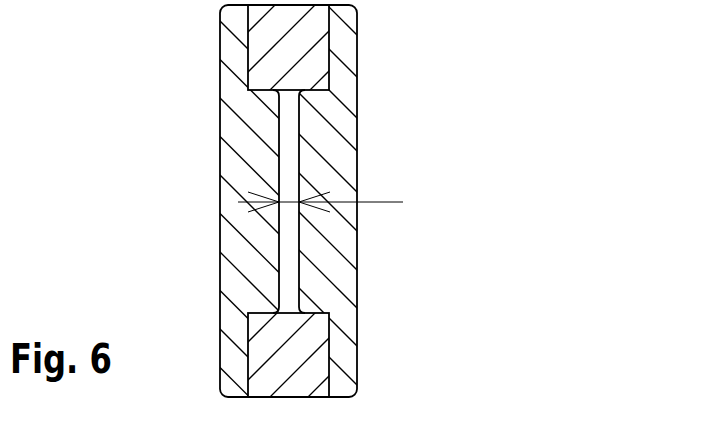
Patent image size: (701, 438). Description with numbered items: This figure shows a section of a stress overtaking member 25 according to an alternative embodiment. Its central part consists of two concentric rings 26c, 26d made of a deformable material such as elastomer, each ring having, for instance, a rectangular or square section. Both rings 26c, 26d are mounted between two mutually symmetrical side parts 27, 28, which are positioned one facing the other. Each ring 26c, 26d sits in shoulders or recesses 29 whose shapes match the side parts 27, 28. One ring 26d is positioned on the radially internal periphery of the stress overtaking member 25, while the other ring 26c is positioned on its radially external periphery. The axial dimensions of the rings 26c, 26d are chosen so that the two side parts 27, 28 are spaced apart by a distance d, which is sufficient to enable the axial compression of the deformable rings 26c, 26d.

The stress overtaking member 25 is at (193, 43).
The ring 26c is at (300, 43).
The ring 26d is at (292, 360).
The side part 27 is at (240, 142).
The side part 28 is at (317, 160).
The shoulders or recesses 29 is at (317, 93).
The distance d is at (320, 195).